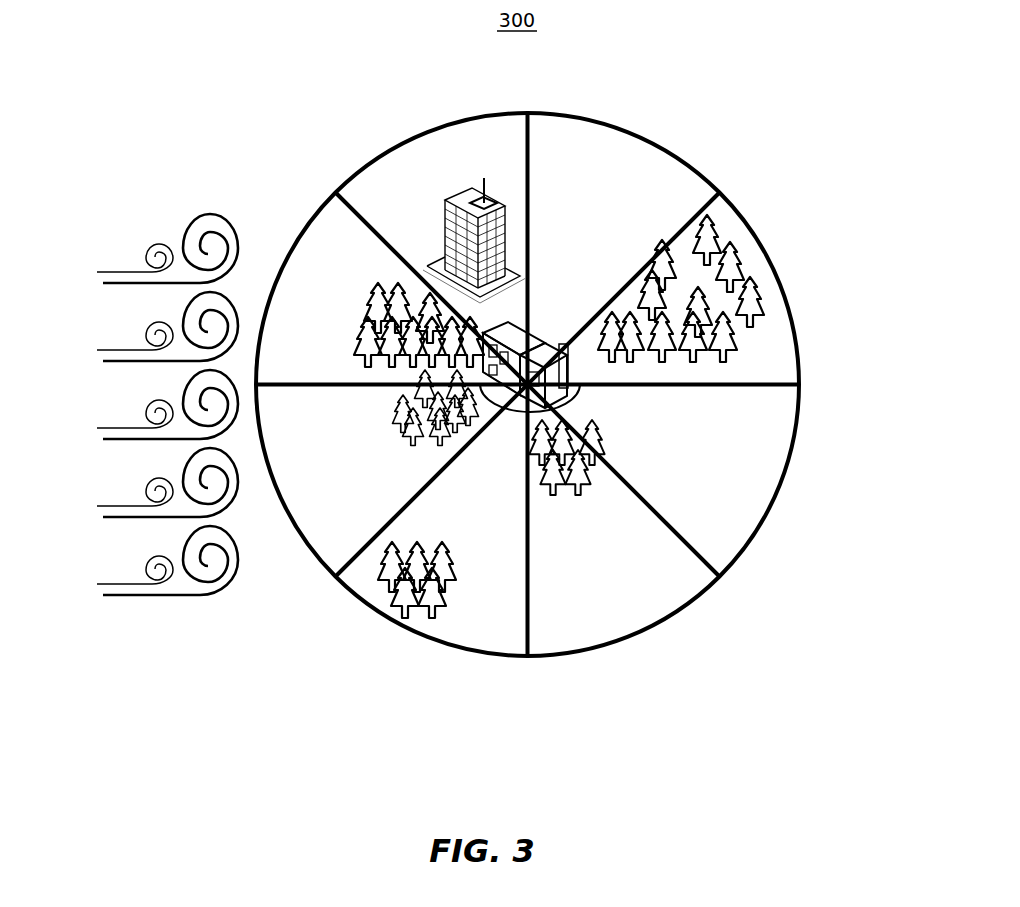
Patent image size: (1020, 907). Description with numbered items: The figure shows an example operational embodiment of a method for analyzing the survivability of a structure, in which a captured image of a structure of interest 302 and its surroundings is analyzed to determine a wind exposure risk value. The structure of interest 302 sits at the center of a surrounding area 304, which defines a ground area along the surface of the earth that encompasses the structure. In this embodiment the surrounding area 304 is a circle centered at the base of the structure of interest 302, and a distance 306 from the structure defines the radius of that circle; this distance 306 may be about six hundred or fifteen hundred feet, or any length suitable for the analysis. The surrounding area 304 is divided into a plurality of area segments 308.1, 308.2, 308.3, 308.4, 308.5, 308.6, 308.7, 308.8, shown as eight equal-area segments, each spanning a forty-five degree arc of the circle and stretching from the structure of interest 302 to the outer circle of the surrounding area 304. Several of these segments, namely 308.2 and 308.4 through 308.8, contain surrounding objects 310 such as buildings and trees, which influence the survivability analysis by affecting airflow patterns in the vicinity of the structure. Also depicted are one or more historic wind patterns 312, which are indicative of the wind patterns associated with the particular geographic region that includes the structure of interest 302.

The structure of interest 302 is at (583, 382).
The surrounding area 304 is at (702, 177).
The distance 306 is at (530, 197).
The area segment 308.1 is at (623, 210).
The area segment 308.2 is at (750, 260).
The area segment 308.3 is at (737, 417).
The area segment 308.4 is at (613, 600).
The area segment 308.5 is at (482, 605).
The area segment 308.6 is at (345, 487).
The area segment 308.7 is at (317, 272).
The area segment 308.8 is at (418, 180).
The objects 310 is at (482, 238).
The historic wind patterns 312 is at (160, 430).